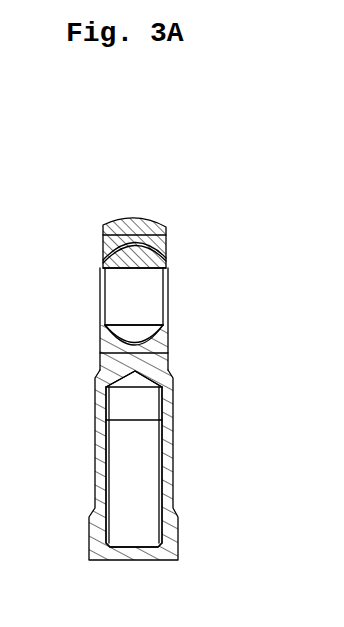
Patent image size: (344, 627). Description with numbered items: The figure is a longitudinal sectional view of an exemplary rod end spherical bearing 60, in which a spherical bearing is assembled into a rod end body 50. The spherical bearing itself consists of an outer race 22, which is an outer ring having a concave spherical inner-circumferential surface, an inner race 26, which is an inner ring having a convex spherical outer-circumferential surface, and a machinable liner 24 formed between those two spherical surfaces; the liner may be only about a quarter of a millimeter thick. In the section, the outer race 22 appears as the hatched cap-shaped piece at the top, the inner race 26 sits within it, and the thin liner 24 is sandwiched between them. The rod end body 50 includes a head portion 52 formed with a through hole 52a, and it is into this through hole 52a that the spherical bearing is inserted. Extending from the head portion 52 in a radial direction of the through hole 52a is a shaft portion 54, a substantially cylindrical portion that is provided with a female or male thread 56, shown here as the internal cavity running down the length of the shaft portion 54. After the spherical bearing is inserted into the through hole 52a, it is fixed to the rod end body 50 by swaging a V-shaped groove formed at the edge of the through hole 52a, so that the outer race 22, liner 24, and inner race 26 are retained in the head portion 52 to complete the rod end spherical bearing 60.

The outer race 22 is at (143, 217).
The machinable liner 24 is at (103, 256).
The inner race 26 is at (166, 258).
The rod end body 50 is at (126, 389).
The head portion 52 is at (118, 232).
The through hole 52a is at (167, 246).
The shaft portion 54 is at (95, 378).
The female or male thread 56 is at (112, 495).
The rod end spherical bearing 60 is at (143, 209).